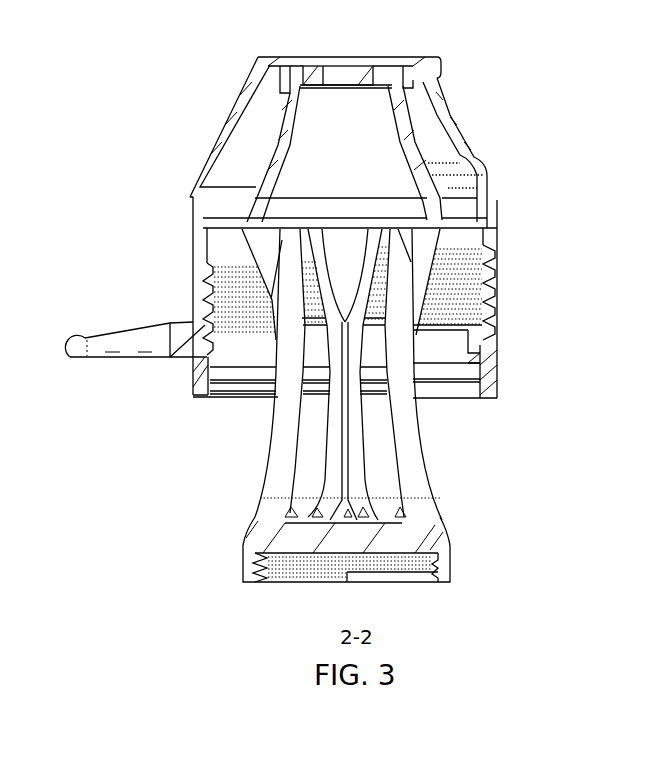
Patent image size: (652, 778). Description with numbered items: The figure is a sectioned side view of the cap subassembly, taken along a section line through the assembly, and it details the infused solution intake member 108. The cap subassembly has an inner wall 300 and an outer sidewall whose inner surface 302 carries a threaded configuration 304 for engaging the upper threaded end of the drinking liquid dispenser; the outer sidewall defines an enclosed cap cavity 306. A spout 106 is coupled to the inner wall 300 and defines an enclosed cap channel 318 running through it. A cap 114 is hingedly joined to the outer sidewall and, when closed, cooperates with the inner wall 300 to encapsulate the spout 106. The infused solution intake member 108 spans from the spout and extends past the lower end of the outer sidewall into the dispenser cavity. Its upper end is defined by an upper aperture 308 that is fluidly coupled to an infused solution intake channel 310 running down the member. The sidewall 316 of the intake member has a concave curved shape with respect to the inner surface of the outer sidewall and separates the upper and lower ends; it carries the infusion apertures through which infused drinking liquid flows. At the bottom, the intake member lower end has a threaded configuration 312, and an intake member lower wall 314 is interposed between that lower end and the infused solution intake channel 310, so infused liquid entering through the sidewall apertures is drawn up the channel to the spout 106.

The spout 106 is at (310, 160).
The infused solution intake member 108 is at (415, 352).
The cap 114 is at (238, 83).
The inner wall 300 is at (478, 224).
The inner surface 302 is at (220, 245).
The threaded configuration 304 is at (220, 297).
The enclosed cap cavity 306 is at (242, 346).
The upper aperture 308 is at (357, 223).
The infused solution intake channel 310 is at (381, 467).
The threaded configuration 312 is at (432, 567).
The intake member lower wall 314 is at (306, 519).
The sidewall 316 is at (402, 365).
The enclosed cap channel 318 is at (348, 95).